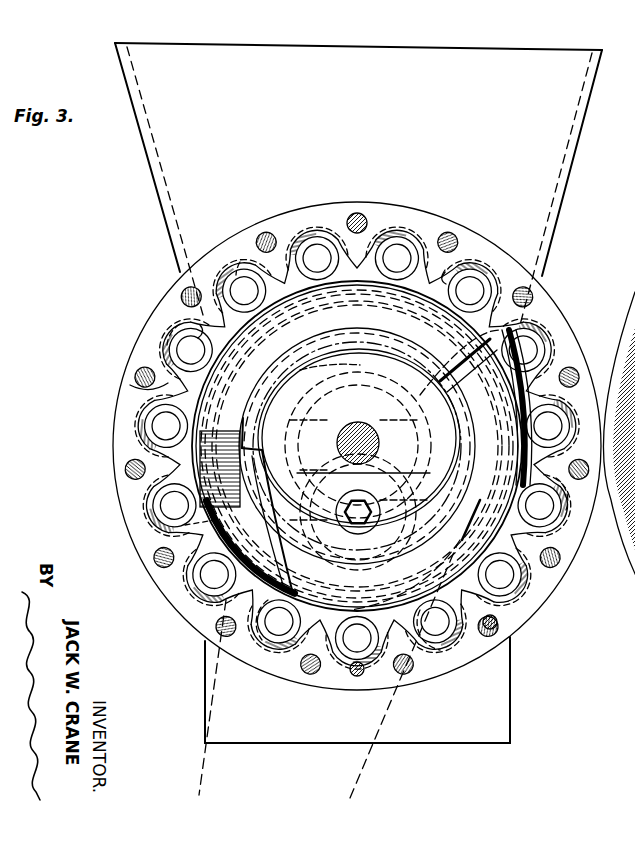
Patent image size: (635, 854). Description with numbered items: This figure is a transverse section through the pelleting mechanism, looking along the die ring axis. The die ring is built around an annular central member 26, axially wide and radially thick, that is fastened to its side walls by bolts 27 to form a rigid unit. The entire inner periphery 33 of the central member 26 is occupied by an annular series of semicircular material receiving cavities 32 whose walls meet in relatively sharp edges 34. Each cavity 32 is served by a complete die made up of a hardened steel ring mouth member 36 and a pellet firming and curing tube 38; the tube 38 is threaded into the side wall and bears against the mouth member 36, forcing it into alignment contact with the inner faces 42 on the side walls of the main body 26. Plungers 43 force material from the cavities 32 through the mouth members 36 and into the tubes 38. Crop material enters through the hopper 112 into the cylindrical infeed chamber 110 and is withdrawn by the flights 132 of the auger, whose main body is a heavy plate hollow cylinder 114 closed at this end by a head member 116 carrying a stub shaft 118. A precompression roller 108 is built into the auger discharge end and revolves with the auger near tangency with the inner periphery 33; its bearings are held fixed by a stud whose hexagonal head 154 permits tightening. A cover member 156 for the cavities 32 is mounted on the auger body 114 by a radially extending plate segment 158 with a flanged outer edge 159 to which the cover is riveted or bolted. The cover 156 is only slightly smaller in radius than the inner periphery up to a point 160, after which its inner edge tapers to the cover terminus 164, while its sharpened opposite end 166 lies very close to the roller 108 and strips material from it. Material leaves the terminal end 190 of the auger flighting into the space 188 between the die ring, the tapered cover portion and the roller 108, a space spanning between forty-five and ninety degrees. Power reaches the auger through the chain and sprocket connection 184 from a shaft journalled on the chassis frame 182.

The central member 26 is at (432, 220).
The bolts 27 is at (135, 371).
The material receiving cavities 32 is at (445, 270).
The inner periphery 33 is at (447, 637).
The sharp edges 34 is at (358, 290).
The mouth members 36 is at (339, 252).
The tubes 38 is at (313, 243).
The inner faces 42 is at (165, 338).
The plungers 43 is at (155, 497).
The precompression roller 108 is at (312, 372).
The infeed chamber 110 is at (499, 614).
The hopper 112 is at (565, 128).
The hollow cylinder 114 is at (358, 347).
The head member 116 is at (310, 380).
The stub shaft 118 is at (380, 452).
The flights 132 is at (477, 393).
The hexagonal head 154 is at (350, 505).
The cover member 156 is at (168, 383).
The plate segment 158 is at (397, 343).
The flanged outer edge 159 is at (190, 532).
The point 160 is at (245, 263).
The cover terminus 164 is at (547, 497).
The sharpened end 166 is at (288, 596).
The chassis frame 182 is at (294, 731).
The chain and sprocket connection 184 is at (362, 772).
The space 188 is at (560, 550).
The terminal end 190 is at (462, 462).